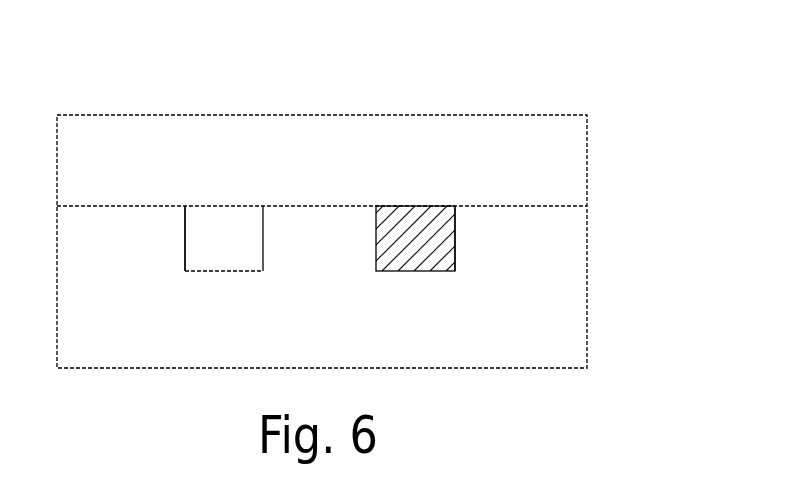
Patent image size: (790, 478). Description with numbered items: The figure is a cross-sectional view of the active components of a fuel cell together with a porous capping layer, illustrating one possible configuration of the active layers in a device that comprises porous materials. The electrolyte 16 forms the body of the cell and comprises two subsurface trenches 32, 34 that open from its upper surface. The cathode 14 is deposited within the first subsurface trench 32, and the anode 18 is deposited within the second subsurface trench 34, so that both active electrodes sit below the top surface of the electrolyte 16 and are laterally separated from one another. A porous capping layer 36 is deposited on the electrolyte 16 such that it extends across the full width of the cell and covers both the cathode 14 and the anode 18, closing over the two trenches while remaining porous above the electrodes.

The cathode 14 is at (403, 257).
The electrolyte 16 is at (587, 246).
The anode 18 is at (237, 255).
The subsurface trench 32 is at (456, 239).
The subsurface trench 34 is at (185, 232).
The porous capping layer 36 is at (470, 115).